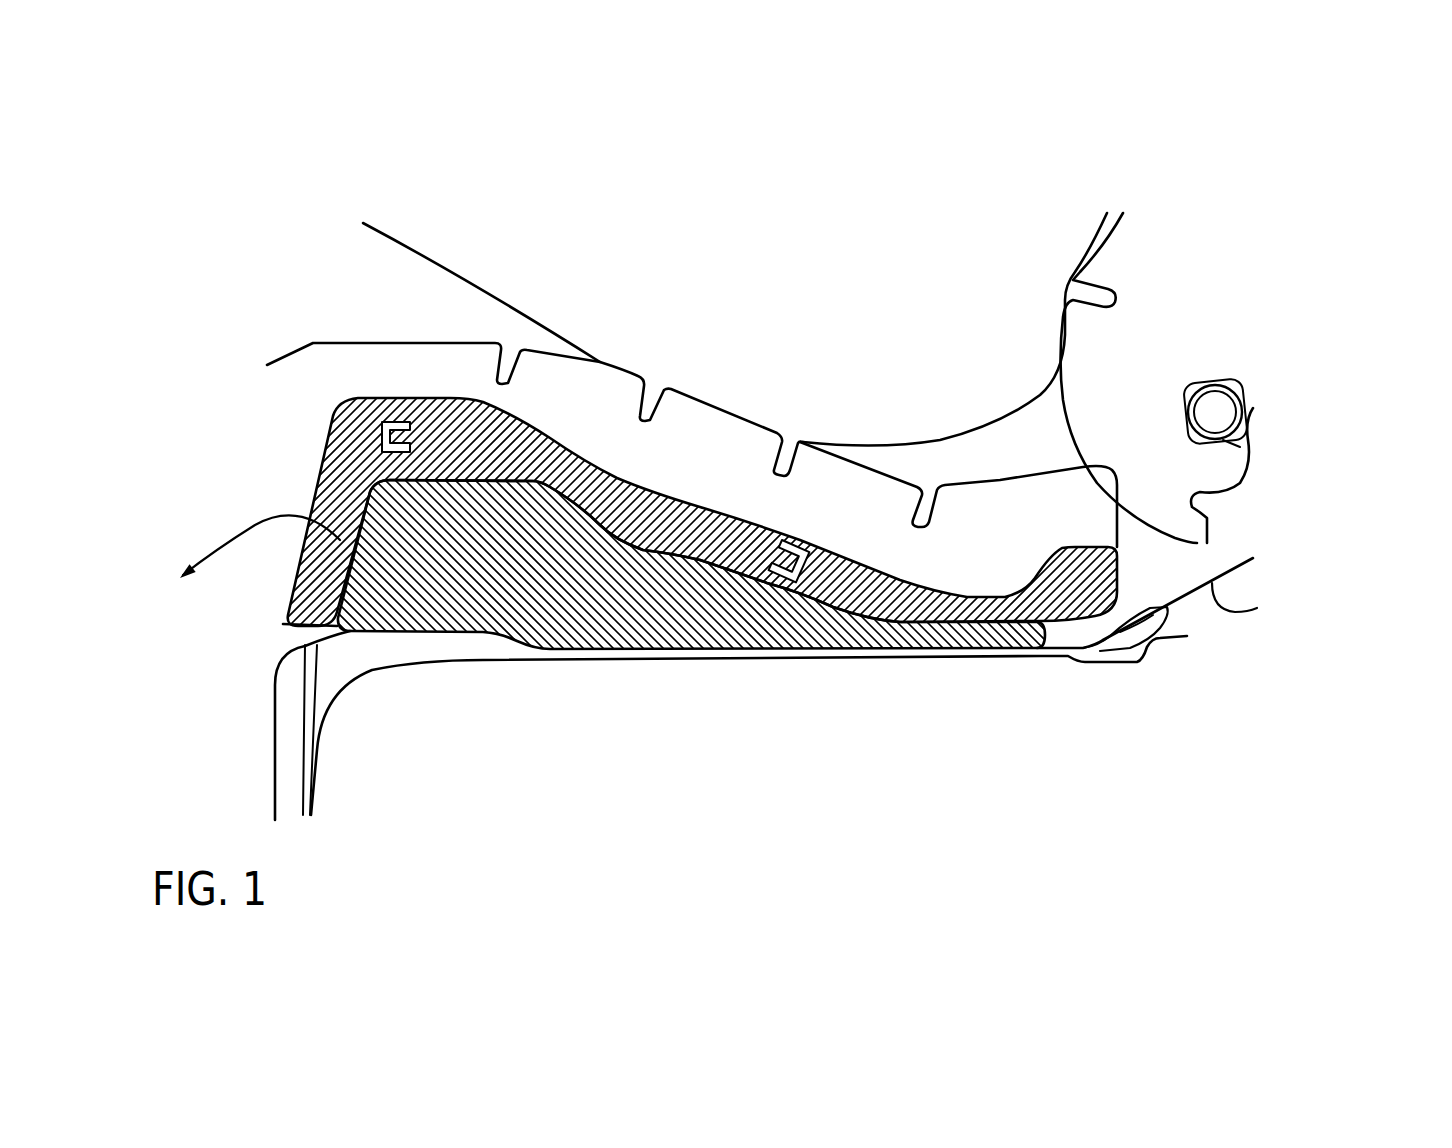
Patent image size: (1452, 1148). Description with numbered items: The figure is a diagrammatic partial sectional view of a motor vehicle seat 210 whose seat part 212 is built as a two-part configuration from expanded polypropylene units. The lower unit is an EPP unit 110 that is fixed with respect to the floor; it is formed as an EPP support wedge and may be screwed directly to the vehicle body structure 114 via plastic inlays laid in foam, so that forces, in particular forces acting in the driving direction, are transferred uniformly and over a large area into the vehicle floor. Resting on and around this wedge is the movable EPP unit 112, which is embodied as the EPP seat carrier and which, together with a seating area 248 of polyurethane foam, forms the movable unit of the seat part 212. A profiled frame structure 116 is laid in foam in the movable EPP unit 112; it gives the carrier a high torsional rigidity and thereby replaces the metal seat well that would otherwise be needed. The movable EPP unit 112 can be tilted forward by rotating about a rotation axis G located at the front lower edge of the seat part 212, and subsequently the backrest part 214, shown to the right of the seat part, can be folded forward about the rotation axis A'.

The EPP unit fixed with respect to the floor 110 is at (632, 603).
The movable EPP unit 112 is at (325, 457).
The vehicle body structure 114 is at (445, 642).
The profiled frame structure 116 is at (782, 540).
The seat part 212 is at (626, 345).
The backrest part 214 is at (1177, 322).
The seating area of PU foam 248 is at (977, 512).
The motor vehicle seat 210 is at (1290, 708).
The rotation axis A' is at (1258, 376).
The rotation axis G is at (249, 638).